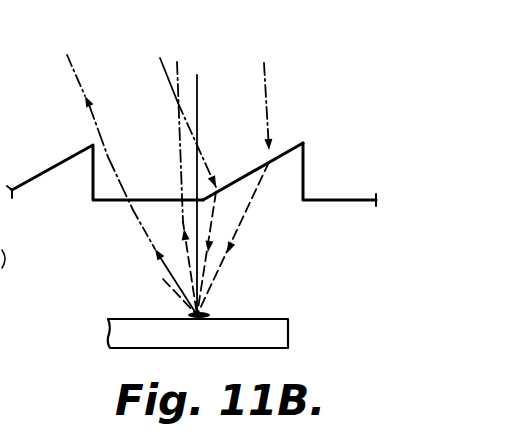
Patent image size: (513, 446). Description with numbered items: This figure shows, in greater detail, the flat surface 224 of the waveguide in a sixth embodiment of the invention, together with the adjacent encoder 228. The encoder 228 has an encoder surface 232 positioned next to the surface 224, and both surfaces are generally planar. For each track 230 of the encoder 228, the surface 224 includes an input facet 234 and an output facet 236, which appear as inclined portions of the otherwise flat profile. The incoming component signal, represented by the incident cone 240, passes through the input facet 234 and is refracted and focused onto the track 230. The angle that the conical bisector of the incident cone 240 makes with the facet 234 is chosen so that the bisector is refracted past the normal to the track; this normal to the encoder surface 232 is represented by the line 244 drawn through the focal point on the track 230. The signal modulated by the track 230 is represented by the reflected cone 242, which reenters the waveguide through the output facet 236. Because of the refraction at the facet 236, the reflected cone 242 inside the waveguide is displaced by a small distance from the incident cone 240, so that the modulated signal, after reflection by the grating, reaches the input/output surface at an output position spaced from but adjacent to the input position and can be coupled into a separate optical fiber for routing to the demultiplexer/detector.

The flat surface 224 is at (197, 197).
The encoder 228 is at (289, 333).
The track 230 is at (205, 316).
The encoder surface 232 is at (270, 318).
The input facet 234 is at (291, 150).
The output facet 236 is at (138, 203).
The incident cone 240 is at (199, 155).
The reflected cone 242 is at (183, 222).
The line (normal to encoder surface) 244 is at (197, 86).